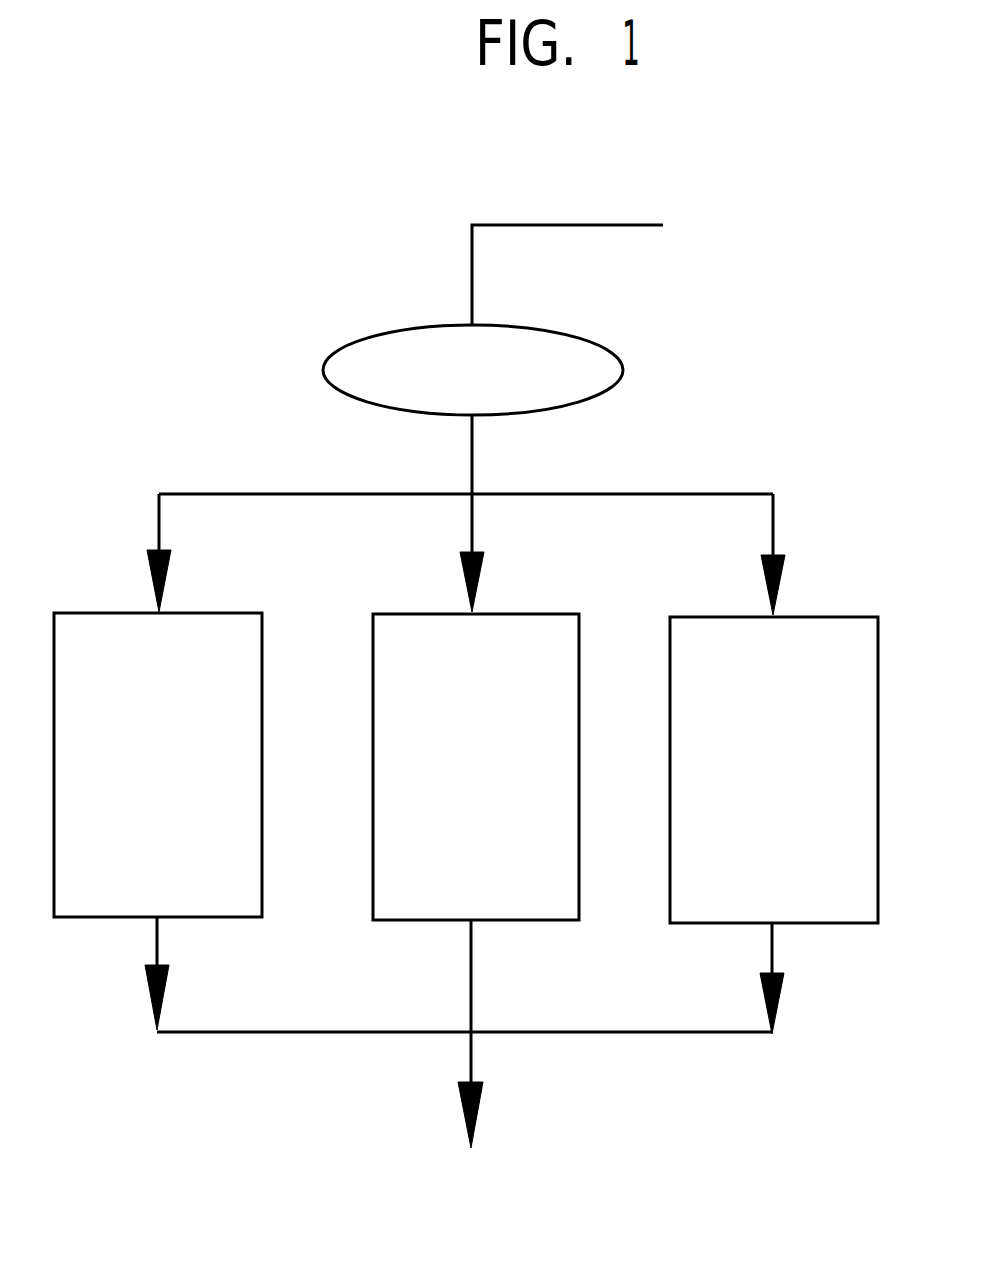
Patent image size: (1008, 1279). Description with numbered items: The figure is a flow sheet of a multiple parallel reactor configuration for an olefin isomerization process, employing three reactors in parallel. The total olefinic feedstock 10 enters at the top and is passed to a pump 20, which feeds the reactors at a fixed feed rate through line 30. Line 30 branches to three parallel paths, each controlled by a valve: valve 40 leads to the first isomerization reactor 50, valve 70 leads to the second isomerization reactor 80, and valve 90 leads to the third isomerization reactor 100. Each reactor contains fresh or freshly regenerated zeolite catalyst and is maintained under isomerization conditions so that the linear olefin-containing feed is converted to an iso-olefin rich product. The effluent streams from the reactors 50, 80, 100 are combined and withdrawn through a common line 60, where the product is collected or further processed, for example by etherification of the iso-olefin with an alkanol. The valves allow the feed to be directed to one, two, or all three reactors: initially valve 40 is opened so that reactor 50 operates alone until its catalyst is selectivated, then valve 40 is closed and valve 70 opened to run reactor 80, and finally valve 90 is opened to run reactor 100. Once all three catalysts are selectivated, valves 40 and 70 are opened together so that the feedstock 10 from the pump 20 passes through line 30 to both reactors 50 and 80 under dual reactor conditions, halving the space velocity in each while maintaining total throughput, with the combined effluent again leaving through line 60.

The olefinic feedstock 10 is at (472, 270).
The pump 20 is at (577, 337).
The line 30 is at (472, 463).
The valve 40 is at (163, 583).
The first isomerization reactor 50 is at (135, 772).
The line 60 is at (471, 1052).
The valve 70 is at (483, 583).
The second isomerization reactor 80 is at (495, 772).
The valve 90 is at (780, 587).
The third isomerization reactor 100 is at (798, 771).